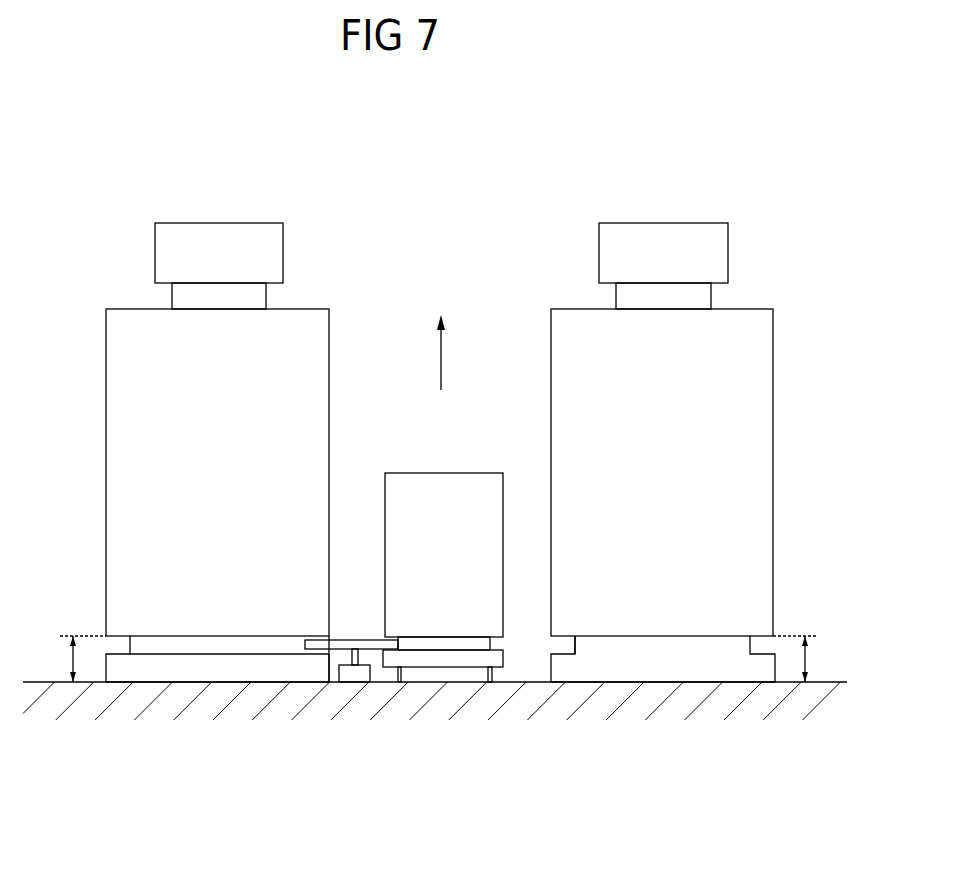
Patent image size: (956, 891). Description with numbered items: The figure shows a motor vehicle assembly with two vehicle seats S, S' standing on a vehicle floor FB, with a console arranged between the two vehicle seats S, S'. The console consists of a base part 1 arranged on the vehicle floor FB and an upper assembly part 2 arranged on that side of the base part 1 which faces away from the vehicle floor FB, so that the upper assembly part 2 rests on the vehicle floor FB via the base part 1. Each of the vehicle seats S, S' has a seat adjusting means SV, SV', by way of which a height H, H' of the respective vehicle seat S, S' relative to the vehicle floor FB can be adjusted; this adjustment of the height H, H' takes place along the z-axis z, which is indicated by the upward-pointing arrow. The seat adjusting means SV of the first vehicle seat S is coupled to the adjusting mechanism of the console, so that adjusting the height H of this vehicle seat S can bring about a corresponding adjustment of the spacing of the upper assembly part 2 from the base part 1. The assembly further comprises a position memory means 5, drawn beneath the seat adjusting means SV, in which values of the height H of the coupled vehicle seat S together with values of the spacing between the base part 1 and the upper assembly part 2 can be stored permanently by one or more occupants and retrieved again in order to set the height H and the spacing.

The base part 1 is at (494, 672).
The upper assembly part 2 is at (443, 473).
The position memory means 5 is at (355, 675).
The seat adjusting means SV is at (300, 714).
The seat adjusting means SV' is at (604, 716).
The vehicle seat S is at (217, 452).
The vehicle seat S' is at (663, 452).
The height H is at (78, 659).
The height H' is at (803, 659).
The vehicle floor FB is at (795, 703).
The z-axis z is at (435, 352).